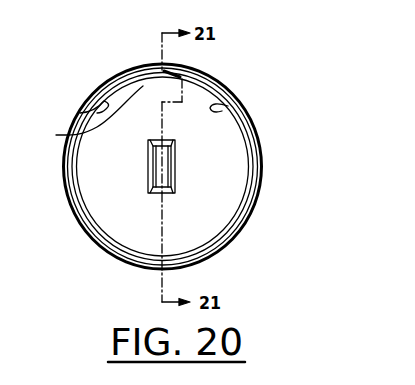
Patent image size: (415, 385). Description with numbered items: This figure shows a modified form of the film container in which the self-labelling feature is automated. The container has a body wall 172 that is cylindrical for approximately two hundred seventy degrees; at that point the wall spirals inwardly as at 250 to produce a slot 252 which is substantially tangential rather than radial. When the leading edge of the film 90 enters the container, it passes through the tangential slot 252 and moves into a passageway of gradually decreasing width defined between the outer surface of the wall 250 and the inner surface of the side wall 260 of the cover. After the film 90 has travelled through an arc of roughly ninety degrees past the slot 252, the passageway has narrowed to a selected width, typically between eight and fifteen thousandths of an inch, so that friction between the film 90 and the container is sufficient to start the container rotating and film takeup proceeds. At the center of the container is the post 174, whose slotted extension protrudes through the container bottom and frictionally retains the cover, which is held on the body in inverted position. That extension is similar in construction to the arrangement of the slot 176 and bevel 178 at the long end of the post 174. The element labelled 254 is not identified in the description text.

The film 90 is at (58, 135).
The body wall 172 is at (80, 113).
The post 174 is at (148, 173).
The slot 176 is at (163, 195).
The bevel 178 is at (176, 144).
The wall 250 is at (228, 106).
The slot 252 is at (170, 83).
The intermediate ring 254 is at (233, 238).
The side wall 260 is at (262, 158).